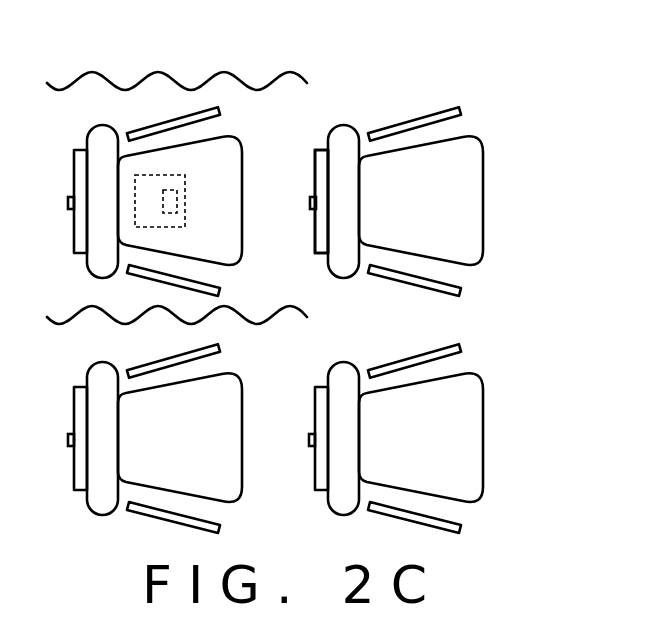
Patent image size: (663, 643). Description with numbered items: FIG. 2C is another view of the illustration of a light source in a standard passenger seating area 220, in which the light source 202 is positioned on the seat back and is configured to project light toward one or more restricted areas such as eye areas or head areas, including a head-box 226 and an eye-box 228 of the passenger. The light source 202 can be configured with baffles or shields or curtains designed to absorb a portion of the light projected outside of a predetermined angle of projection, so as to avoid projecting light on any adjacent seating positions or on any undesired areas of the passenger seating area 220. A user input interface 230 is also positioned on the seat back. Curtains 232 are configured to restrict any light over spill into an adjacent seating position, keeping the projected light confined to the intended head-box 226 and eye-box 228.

The passenger seating area 220 is at (408, 194).
The light source 202 is at (310, 202).
The user input interface 230 is at (315, 245).
The head-box 226 is at (145, 174).
The eye-box 228 is at (172, 215).
The curtains 232 is at (256, 71).